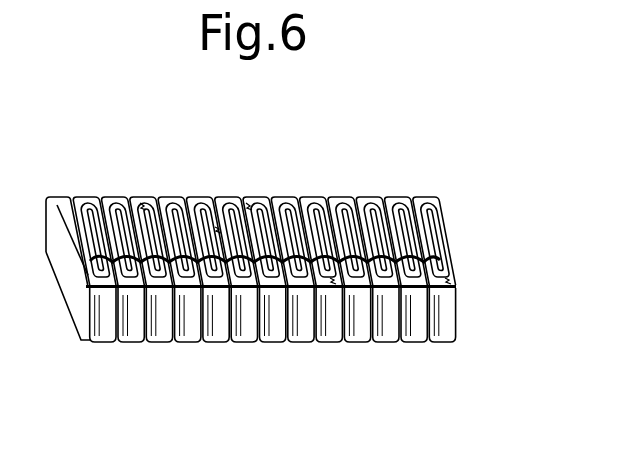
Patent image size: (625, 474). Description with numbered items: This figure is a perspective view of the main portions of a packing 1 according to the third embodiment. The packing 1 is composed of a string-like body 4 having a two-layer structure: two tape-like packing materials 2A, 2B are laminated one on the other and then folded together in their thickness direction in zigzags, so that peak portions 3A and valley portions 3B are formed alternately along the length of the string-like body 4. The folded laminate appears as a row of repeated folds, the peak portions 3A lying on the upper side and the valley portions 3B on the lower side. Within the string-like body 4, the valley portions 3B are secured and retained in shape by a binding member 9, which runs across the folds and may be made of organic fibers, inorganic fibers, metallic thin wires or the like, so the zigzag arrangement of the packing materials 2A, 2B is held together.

The packing 1 is at (141, 186).
The peak portions 3A is at (230, 195).
The tape-like packing material 2A is at (341, 196).
The string-like body 4 is at (399, 196).
The binding member 9 is at (221, 290).
The tape-like packing material 2B is at (297, 293).
The valley portions 3B is at (415, 338).